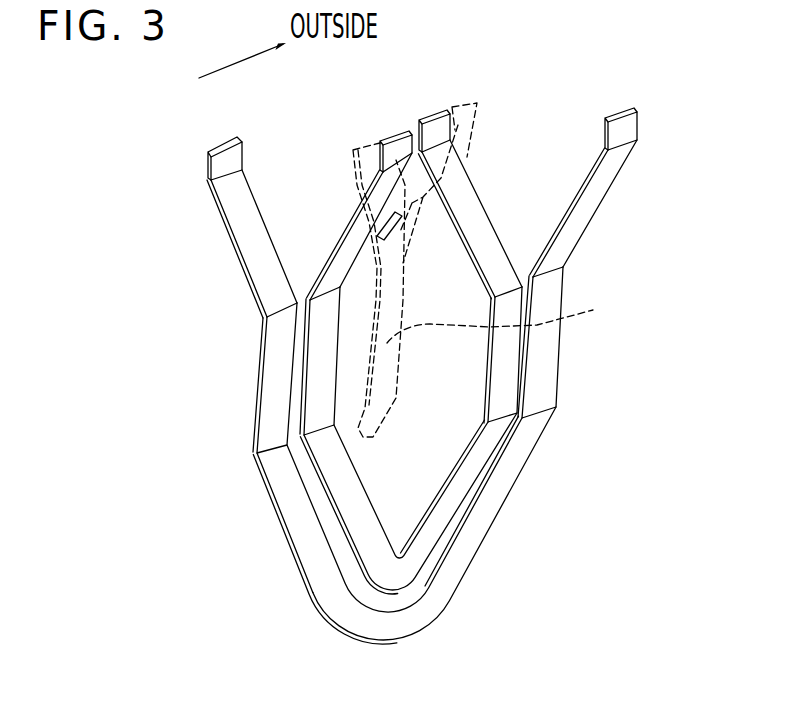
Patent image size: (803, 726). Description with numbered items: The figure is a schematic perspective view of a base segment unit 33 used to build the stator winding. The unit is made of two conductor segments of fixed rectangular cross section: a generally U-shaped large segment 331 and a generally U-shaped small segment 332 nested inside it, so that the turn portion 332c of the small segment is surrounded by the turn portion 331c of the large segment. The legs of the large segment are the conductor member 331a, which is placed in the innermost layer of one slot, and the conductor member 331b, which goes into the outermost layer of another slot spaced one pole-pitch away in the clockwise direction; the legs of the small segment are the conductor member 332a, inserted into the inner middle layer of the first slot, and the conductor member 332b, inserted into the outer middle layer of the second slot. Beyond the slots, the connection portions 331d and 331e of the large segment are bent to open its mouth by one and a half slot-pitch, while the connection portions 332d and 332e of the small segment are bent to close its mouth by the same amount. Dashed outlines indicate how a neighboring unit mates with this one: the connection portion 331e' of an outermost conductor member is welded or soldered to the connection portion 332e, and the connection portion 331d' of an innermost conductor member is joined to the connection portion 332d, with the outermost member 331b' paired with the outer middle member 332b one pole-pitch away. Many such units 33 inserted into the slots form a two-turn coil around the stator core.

The base segment unit 33 is at (306, 598).
The large segment 331 is at (594, 226).
The conductor member 331a is at (277, 365).
The conductor member 331b is at (587, 342).
The conductor member 331b' is at (523, 318).
The turn portion 331c is at (375, 627).
The connection portion 331d is at (177, 158).
The connection portion 331d' is at (380, 261).
The connection portion 331e is at (674, 129).
The connection portion 331e' is at (486, 102).
The small segment 332 is at (508, 238).
The conductor member 332a is at (313, 388).
The conductor member 332b is at (507, 392).
The turn portion 332c is at (397, 578).
The connection portion 332d is at (398, 133).
The connection portion 332e is at (441, 127).